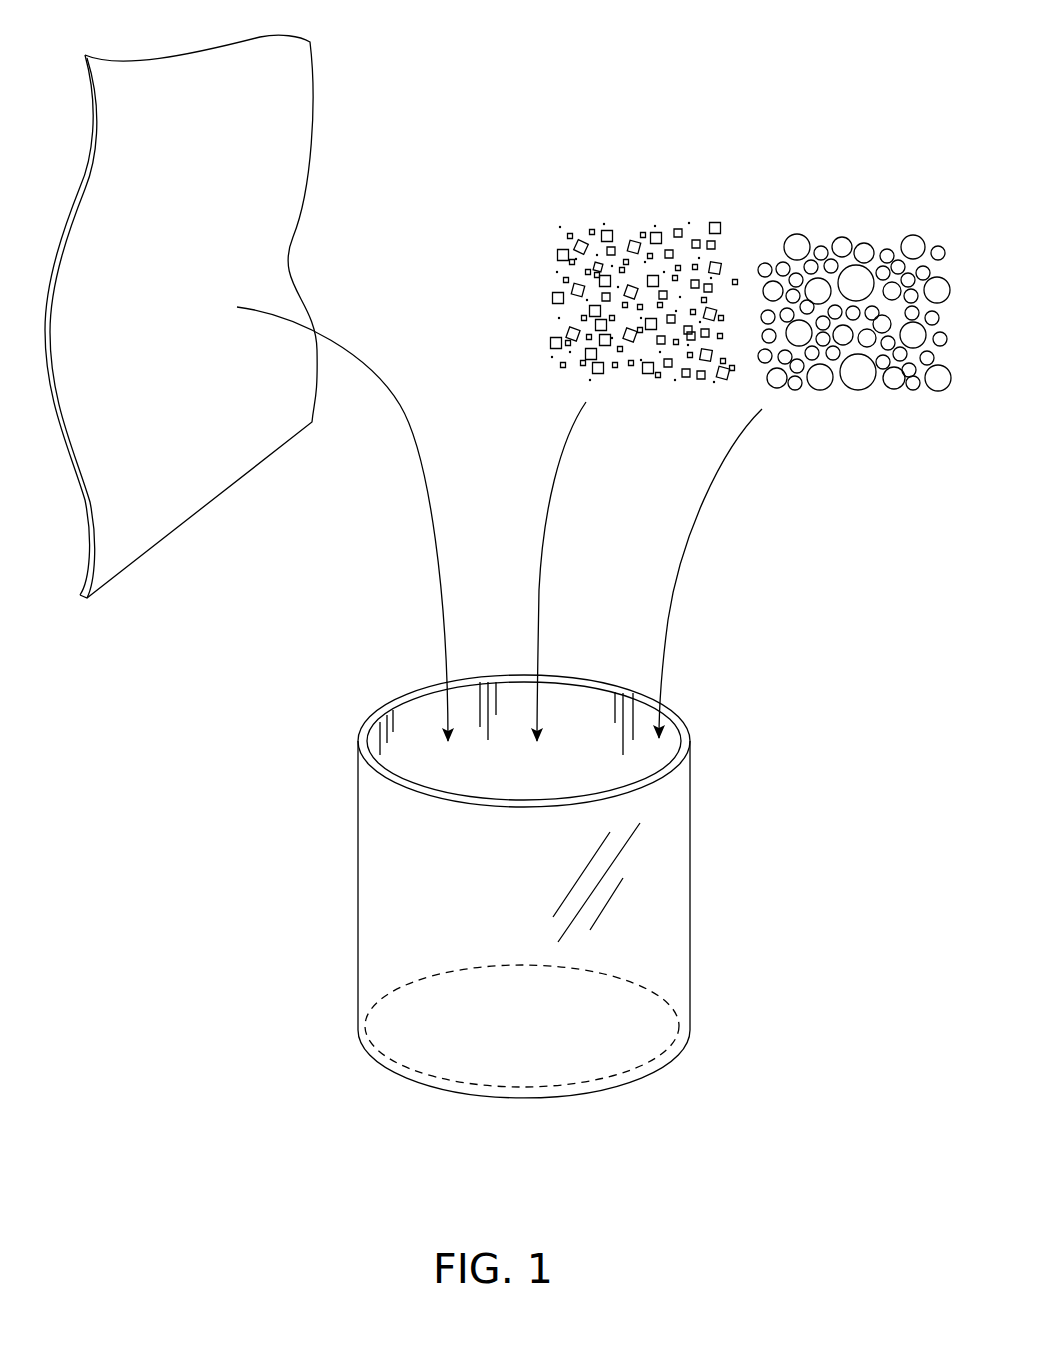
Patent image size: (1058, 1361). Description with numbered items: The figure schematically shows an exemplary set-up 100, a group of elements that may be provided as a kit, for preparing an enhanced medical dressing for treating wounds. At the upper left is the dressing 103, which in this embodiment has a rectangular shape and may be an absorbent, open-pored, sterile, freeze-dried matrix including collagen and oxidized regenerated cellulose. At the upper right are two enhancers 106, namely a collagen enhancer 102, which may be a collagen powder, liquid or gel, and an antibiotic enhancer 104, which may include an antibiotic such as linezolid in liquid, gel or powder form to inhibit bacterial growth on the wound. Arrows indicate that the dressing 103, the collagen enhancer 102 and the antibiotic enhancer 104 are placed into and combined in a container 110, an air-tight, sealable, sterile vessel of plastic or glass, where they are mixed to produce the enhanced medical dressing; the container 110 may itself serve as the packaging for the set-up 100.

The set-up 100 is at (830, 117).
The collagen enhancer 102 is at (678, 205).
The dressing 103 is at (216, 171).
The antibiotic enhancer 104 is at (921, 223).
The enhancers 106 is at (728, 220).
The container 110 is at (641, 912).